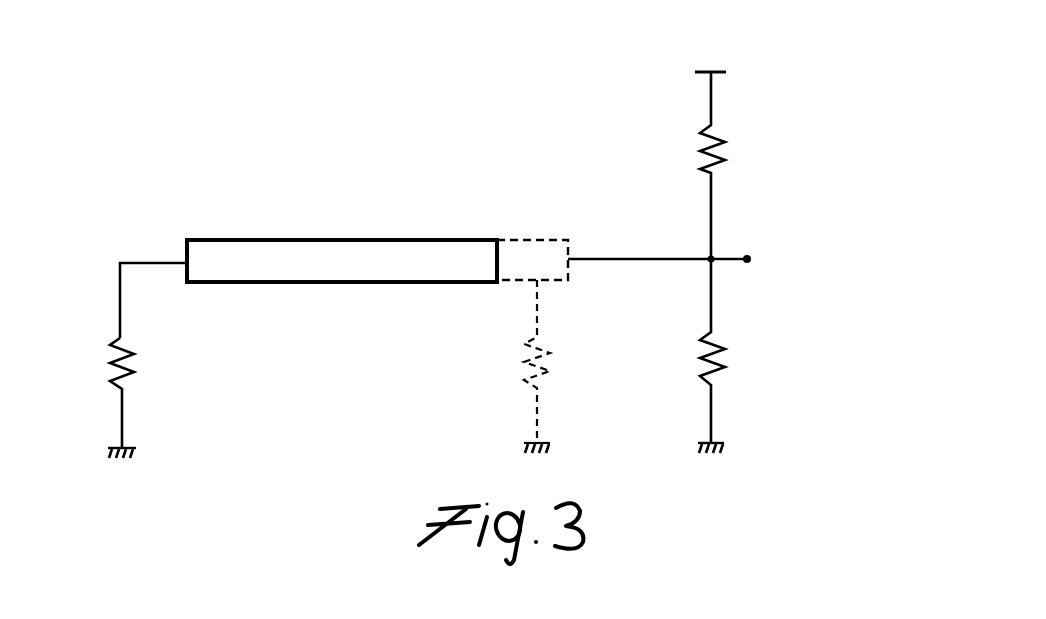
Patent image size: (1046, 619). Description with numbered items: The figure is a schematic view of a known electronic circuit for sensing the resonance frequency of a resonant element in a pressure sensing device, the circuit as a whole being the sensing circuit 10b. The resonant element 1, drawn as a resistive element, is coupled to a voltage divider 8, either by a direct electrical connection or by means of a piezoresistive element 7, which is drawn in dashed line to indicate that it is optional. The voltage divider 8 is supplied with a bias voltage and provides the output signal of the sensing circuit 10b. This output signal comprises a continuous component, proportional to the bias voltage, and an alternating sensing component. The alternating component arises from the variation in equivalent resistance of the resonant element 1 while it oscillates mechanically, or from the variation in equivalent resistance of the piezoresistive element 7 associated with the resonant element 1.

The sensing circuit 10b is at (506, 243).
The resonant element 1 is at (251, 232).
The piezoresistive element 7 is at (512, 297).
The voltage divider 8 is at (748, 300).